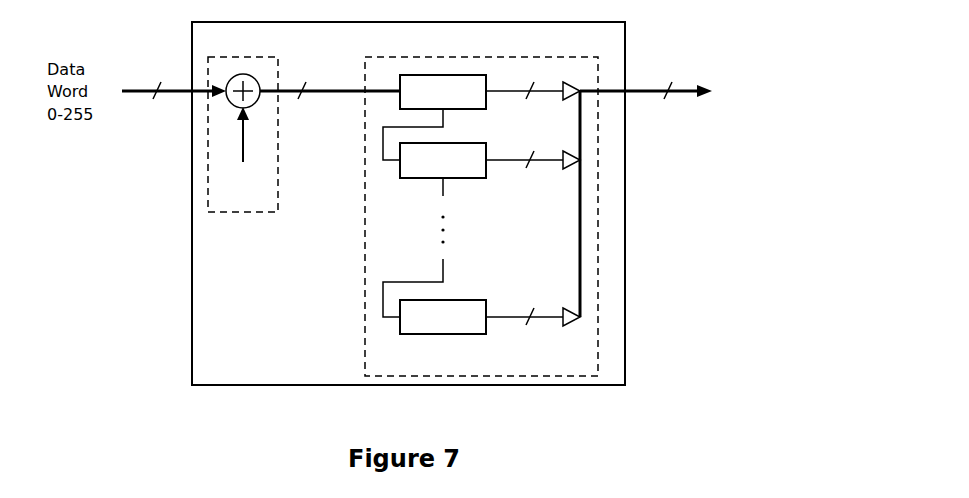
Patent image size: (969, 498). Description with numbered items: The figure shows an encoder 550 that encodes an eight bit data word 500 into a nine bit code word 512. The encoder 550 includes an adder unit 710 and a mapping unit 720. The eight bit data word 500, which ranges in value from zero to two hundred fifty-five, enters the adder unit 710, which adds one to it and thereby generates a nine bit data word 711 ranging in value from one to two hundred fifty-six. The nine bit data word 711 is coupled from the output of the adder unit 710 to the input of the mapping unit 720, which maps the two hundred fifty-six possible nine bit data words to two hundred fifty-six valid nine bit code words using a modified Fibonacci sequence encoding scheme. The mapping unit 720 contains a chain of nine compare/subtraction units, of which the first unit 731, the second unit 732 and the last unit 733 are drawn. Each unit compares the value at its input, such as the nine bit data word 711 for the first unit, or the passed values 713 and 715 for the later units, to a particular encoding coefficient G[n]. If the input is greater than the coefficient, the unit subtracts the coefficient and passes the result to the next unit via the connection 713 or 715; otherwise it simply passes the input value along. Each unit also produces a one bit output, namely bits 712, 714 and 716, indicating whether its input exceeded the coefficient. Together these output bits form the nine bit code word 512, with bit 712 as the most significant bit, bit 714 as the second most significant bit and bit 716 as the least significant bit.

The encoder 550 is at (408, 203).
The eight bit data word 500 is at (181, 96).
The adder unit 710 is at (263, 212).
The nine bit data word 711 is at (347, 96).
The mapping unit 720 is at (365, 322).
The compare/subtraction unit 731 is at (470, 110).
The compare/subtraction unit 732 is at (470, 179).
The compare/subtraction unit 733 is at (470, 335).
The CSU input 713 is at (395, 163).
The CSU input 715 is at (395, 318).
The CSU output bit 712 is at (497, 96).
The CSU output bit 714 is at (497, 165).
The CSU output bit 716 is at (497, 322).
The nine bit code word 512 is at (693, 96).